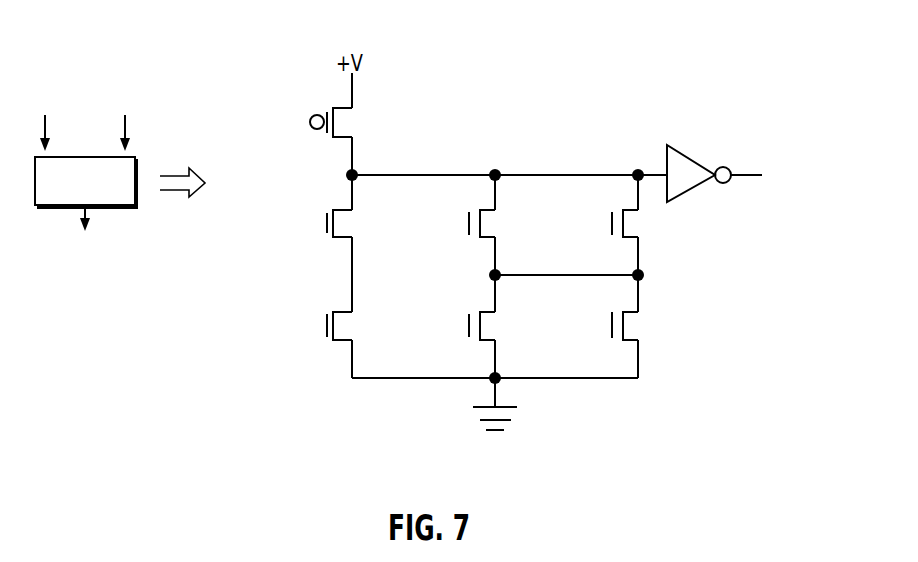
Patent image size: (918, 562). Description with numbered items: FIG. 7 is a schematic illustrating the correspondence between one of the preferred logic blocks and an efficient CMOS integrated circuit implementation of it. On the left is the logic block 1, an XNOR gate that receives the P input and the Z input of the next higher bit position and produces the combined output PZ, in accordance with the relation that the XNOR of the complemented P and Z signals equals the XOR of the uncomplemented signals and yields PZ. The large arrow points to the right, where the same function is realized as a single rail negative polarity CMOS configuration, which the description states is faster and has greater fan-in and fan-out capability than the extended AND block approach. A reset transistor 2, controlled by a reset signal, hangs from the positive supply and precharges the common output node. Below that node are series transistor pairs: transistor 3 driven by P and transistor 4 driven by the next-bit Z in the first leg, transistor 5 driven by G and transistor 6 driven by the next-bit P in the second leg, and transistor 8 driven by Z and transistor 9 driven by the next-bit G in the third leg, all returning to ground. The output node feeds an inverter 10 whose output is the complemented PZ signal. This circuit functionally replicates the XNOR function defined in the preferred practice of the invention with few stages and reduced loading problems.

The XNOR gate block 1 is at (97, 243).
The reset PMOS transistor (RST) 2 is at (310, 122).
The NMOS transistor gated by P_K 3 is at (327, 223).
The NMOS transistor gated by Z_K+1 4 is at (327, 325).
The NMOS transistor gated by G_K 5 is at (469, 223).
The NMOS transistor gated by P_K+1 6 is at (469, 325).
The NMOS transistor gated by Z_K 8 is at (612, 223).
The NMOS transistor gated by G_K+1 9 is at (612, 325).
The output inverter producing PZ_K 10 is at (810, 155).